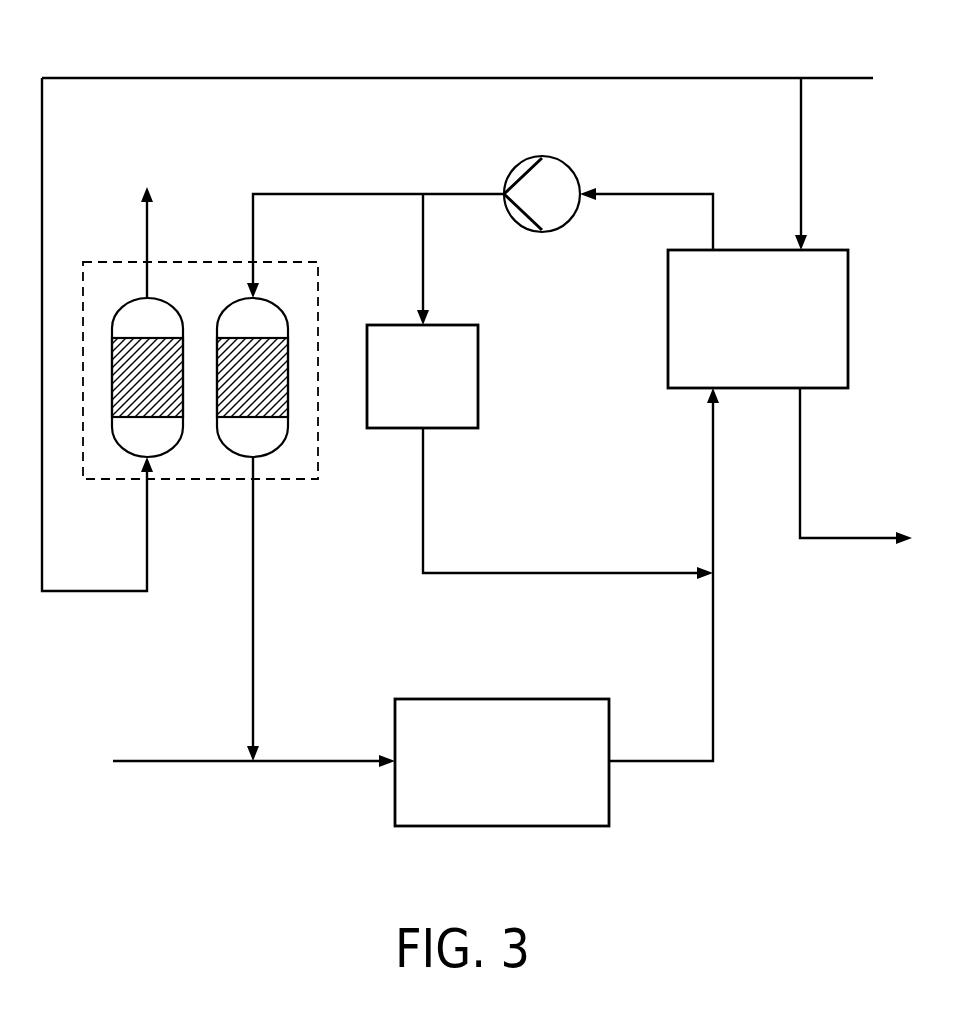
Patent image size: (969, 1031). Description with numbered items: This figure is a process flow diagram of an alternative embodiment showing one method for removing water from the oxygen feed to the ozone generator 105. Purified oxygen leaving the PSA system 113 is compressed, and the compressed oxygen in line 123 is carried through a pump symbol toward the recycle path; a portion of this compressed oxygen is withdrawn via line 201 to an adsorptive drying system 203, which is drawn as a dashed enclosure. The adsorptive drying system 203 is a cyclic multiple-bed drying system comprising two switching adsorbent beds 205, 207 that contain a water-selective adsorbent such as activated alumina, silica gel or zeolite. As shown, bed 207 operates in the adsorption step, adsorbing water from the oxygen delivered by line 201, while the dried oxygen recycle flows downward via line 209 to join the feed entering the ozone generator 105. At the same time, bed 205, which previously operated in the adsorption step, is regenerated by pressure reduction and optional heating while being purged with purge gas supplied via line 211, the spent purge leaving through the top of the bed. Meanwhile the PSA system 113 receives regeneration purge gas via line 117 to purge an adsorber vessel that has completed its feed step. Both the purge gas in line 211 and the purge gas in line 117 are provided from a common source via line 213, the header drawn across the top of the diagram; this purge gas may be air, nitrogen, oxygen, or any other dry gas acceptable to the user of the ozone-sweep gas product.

The ozone generator 105 is at (472, 773).
The PSA system 113 is at (734, 330).
The purge gas line 117 is at (801, 197).
The compressed oxygen line 123 is at (463, 193).
The line to adsorptive drying system 201 is at (362, 193).
The adsorptive drying system 203 is at (318, 306).
The adsorbent bed 205 is at (125, 386).
The adsorbent bed 207 is at (230, 386).
The dried oxygen recycle line 209 is at (253, 633).
The purge gas line 211 is at (147, 520).
The common purge gas supply line 213 is at (841, 78).